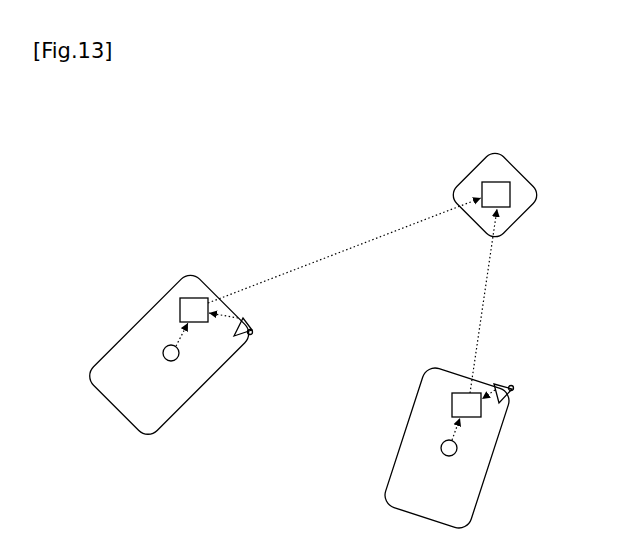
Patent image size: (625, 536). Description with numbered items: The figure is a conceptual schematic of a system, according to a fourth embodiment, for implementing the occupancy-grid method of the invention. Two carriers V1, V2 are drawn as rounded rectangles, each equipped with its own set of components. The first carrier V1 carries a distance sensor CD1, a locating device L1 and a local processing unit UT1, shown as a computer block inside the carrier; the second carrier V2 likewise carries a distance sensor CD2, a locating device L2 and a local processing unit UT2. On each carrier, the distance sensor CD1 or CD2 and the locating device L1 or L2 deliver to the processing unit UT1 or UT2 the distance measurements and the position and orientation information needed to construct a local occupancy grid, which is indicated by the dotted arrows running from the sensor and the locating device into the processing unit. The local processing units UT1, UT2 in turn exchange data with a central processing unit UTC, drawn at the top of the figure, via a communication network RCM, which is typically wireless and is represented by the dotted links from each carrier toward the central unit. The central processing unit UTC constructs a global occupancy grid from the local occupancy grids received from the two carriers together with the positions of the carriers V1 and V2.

The carrier V1 is at (157, 300).
The local processing unit UT1 is at (181, 299).
The locating device L1 is at (164, 349).
The distance sensor CD1 is at (245, 336).
The central processing unit UTC is at (488, 182).
The communication network RCM is at (302, 253).
The carrier V2 is at (432, 393).
The local processing unit UT2 is at (455, 393).
The locating device L2 is at (441, 447).
The distance sensor CD2 is at (513, 403).